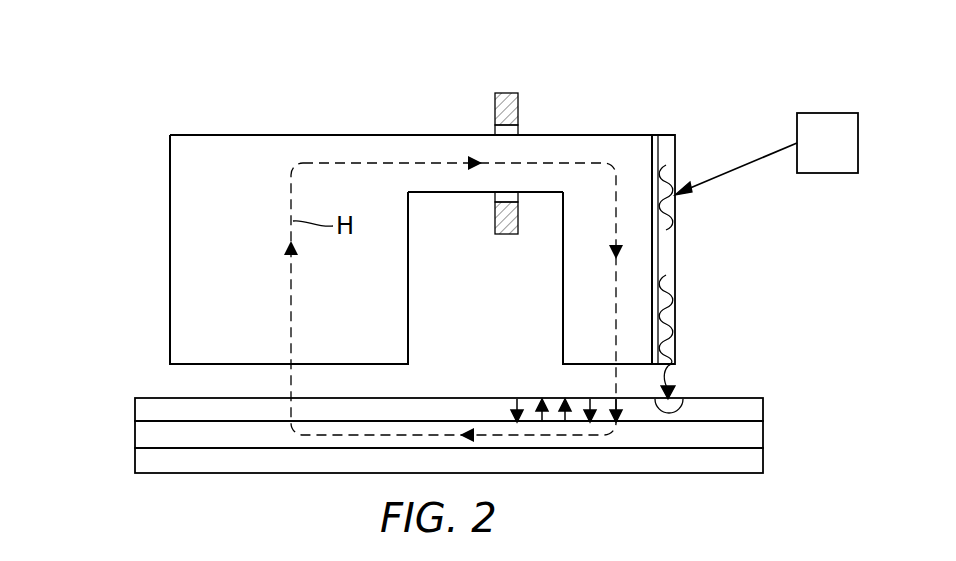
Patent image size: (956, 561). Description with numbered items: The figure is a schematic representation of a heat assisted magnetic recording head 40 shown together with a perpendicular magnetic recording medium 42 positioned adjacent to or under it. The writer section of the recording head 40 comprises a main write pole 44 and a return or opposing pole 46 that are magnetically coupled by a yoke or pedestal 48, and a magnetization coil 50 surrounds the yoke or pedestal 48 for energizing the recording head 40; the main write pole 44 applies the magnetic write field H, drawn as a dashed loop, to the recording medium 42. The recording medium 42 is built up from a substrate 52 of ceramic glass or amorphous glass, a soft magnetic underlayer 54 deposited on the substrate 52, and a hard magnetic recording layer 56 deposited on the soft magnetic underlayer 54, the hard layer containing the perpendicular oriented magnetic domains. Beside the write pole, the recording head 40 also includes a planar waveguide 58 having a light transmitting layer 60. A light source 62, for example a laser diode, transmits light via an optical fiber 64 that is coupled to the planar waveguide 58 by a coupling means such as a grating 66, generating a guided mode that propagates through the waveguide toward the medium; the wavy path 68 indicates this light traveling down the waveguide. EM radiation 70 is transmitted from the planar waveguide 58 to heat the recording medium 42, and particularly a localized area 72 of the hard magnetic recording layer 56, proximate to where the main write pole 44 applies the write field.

The heat assisted magnetic recording head 40 is at (142, 136).
The magnetic recording medium 42 is at (120, 398).
The main write pole 44 is at (573, 306).
The return or opposing pole 46 is at (170, 257).
The yoke or pedestal 48 is at (547, 150).
The magnetization coil 50 is at (505, 110).
The substrate 52 is at (150, 462).
The soft magnetic underlayer 54 is at (148, 437).
The hard magnetic recording layer 56 is at (152, 396).
The planar waveguide 58 is at (666, 254).
The light transmitting layer 60 is at (668, 134).
The light source 62 is at (828, 177).
The optical fiber 64 is at (727, 158).
The grating 66 is at (672, 200).
The heat flow toward medium 68 is at (645, 325).
The EM radiation 70 is at (669, 375).
The localized area 72 is at (683, 403).